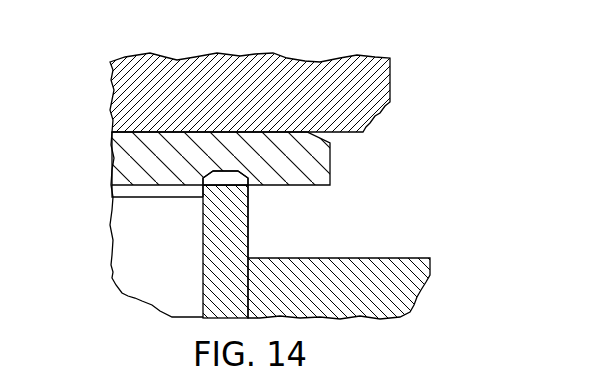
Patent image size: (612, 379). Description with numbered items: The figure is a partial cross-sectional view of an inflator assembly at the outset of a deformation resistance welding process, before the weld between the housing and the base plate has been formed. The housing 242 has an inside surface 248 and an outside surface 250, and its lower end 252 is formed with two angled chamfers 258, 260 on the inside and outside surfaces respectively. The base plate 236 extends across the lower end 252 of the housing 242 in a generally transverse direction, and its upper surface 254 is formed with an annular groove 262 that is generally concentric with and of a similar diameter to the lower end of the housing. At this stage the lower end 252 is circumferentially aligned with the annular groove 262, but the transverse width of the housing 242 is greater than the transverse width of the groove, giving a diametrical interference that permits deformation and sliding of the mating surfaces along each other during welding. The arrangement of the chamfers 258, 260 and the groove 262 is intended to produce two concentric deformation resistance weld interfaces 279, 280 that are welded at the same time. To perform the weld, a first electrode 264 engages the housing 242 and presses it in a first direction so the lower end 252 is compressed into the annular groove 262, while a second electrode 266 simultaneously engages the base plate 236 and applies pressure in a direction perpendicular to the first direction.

The base plate 236 is at (330, 163).
The housing portion 242 is at (203, 283).
The inside surface 248 is at (248, 212).
The outside surface 250 is at (248, 237).
The lower end 252 is at (226, 162).
The upper surface 254 is at (130, 188).
The angled chamfer 258 is at (203, 190).
The angled chamfer 260 is at (248, 191).
The annular groove 262 is at (230, 165).
The first electrode 264 is at (395, 285).
The second electrode 266 is at (377, 81).
The deformation resistance weld interface 279 is at (210, 177).
The deformation resistance weld interface 280 is at (248, 180).